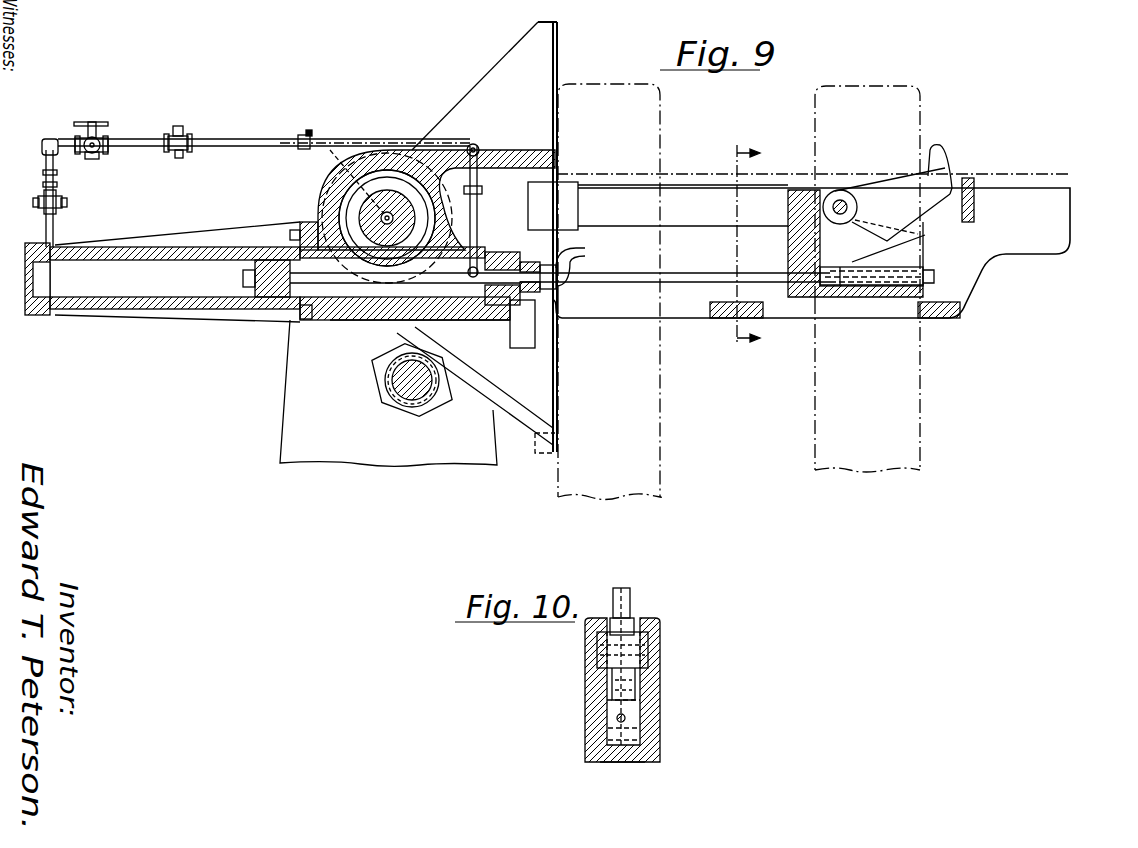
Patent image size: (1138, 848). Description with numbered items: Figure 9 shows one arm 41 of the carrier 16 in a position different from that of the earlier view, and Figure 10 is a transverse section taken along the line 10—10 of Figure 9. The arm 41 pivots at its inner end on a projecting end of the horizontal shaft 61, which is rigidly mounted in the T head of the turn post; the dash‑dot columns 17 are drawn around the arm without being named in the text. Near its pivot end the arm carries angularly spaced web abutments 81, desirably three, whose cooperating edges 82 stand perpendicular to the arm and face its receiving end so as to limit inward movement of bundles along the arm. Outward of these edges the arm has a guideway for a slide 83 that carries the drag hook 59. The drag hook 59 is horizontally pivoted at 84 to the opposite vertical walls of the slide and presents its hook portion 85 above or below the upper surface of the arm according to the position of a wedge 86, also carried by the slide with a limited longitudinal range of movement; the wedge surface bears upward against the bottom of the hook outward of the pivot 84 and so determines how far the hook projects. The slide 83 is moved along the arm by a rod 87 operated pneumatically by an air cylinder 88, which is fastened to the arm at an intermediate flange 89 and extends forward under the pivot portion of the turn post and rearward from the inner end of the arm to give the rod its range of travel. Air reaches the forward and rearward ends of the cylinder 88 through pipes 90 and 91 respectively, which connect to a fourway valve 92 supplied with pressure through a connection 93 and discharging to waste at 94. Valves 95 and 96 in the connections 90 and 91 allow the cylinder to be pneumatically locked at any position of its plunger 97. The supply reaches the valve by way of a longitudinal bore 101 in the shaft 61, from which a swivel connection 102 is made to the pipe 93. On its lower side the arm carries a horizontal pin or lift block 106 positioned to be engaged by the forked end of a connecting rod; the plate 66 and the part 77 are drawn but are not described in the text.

In FIG. 9, the section line 10— 10 is at (759, 246).
In FIG. 9, the carrier 16 is at (684, 314).
In FIG. 10, the carrier 16 is at (660, 734).
In FIG. 9, the column 17 is at (640, 375).
In FIG. 9, the arm 41 is at (1066, 193).
In FIG. 10, the arm 41 is at (585, 742).
In FIG. 9, the drag hook 59 is at (888, 180).
In FIG. 10, the drag hook 59 is at (628, 615).
In FIG. 9, the shaft 61 is at (352, 208).
In FIG. 9, the plate 66 is at (288, 381).
In FIG. 9, the bearing block 77 is at (345, 218).
In FIG. 9, the web abutments 81 is at (518, 42).
In FIG. 9, the cooperating edges 82 is at (553, 56).
In FIG. 9, the slide 83 is at (790, 236).
In FIG. 10, the slide 83 is at (600, 716).
In FIG. 9, the pivot 84 is at (835, 206).
In FIG. 10, the pivot 84 is at (597, 656).
In FIG. 9, the hook portion 85 is at (944, 150).
In FIG. 10, the hook portion 85 is at (622, 592).
In FIG. 9, the wedge 86 is at (913, 247).
In FIG. 10, the wedge 86 is at (640, 690).
In FIG. 9, the rod 87 is at (710, 272).
In FIG. 10, the rod 87 is at (645, 714).
In FIG. 9, the air cylinder 88 is at (178, 256).
In FIG. 9, the intermediate flange 89 is at (310, 318).
In FIG. 9, the pipe 90 is at (54, 228).
In FIG. 9, the pipe 91 is at (262, 146).
In FIG. 9, the fourway valve 92 is at (96, 140).
In FIG. 9, the connection 93 is at (328, 164).
In FIG. 9, the waste discharge 94 is at (99, 154).
In FIG. 9, the valve 95 is at (58, 198).
In FIG. 9, the valve 96 is at (186, 140).
In FIG. 9, the plunger 97 is at (250, 268).
In FIG. 9, the longitudinal bore 101 is at (440, 232).
In FIG. 9, the swivel connection 102 is at (405, 200).
In FIG. 9, the lift block 106 is at (412, 395).